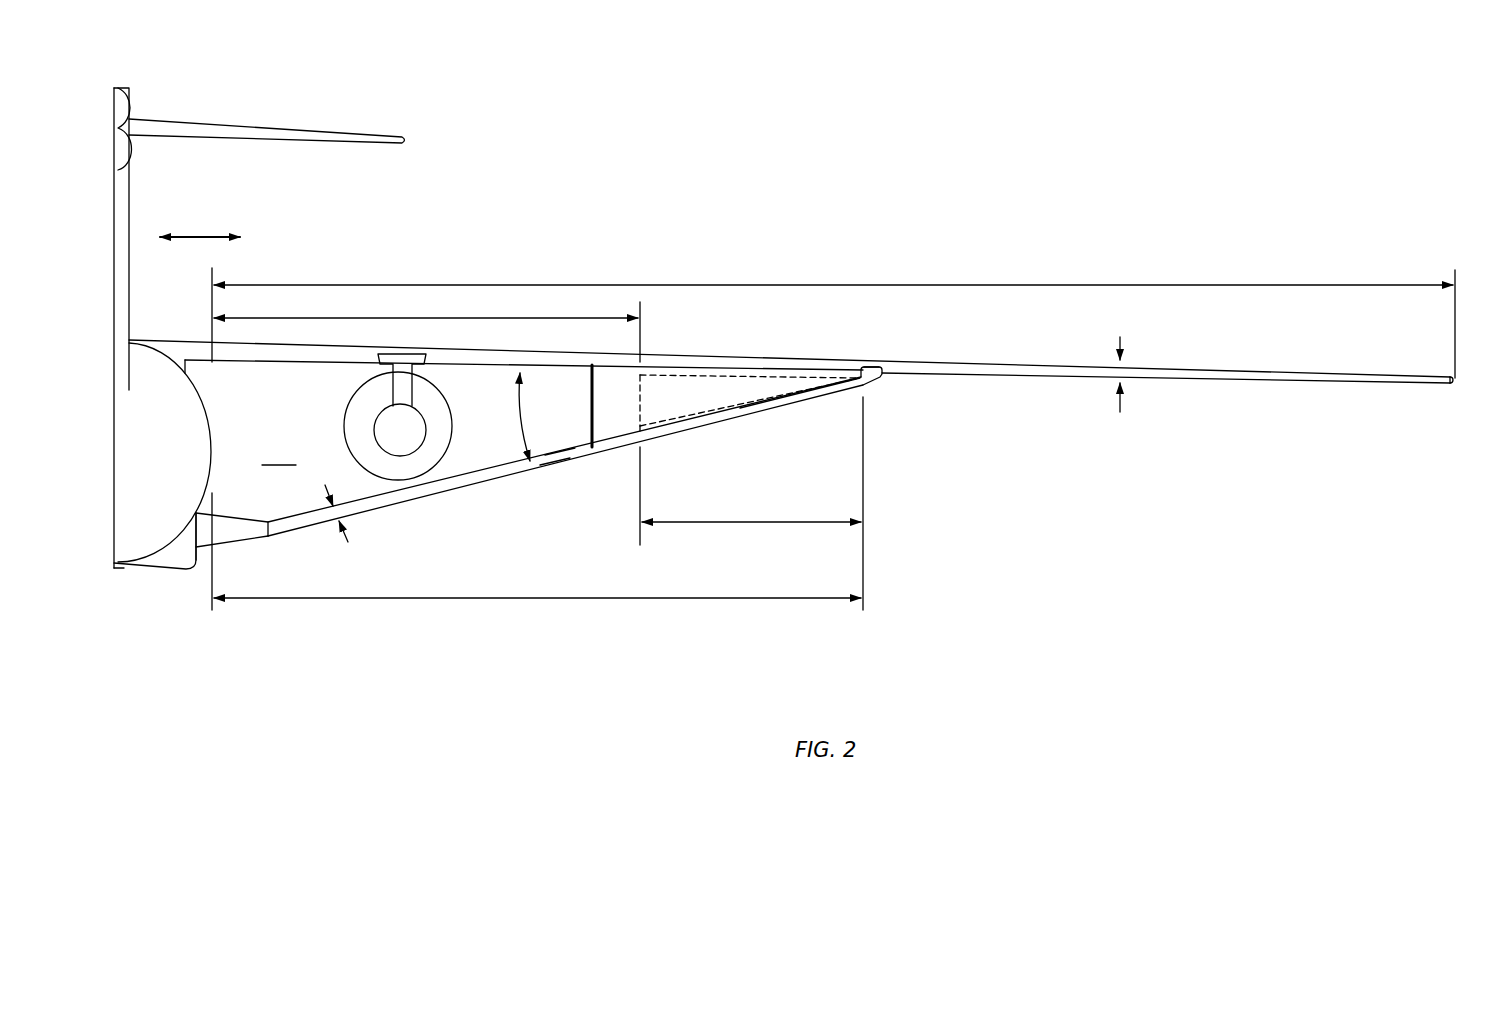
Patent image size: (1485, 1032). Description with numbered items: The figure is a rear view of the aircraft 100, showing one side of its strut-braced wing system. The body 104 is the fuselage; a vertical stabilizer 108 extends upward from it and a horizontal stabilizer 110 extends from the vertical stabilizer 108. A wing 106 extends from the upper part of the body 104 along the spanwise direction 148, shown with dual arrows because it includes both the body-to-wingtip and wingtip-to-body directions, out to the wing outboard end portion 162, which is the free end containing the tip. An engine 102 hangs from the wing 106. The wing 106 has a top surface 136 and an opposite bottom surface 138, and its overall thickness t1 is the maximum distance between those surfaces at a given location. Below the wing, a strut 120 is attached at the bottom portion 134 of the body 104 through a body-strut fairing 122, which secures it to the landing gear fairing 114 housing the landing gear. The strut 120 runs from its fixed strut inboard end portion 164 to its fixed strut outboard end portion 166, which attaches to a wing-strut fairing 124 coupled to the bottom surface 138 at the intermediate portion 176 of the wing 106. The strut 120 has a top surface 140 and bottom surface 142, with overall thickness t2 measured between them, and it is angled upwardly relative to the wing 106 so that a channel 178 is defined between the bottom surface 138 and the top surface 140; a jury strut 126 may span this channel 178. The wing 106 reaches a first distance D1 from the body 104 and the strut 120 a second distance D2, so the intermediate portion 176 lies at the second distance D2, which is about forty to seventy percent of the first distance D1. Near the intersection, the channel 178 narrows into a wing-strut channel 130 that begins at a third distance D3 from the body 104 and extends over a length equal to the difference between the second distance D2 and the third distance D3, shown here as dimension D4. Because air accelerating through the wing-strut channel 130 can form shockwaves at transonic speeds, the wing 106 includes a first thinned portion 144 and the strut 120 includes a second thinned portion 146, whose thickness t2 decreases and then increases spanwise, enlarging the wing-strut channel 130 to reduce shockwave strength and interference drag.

The aircraft 100 is at (868, 170).
The engine 102 is at (342, 416).
The body 104 is at (191, 381).
The wing 106 is at (1289, 389).
The vertical stabilizer 108 is at (132, 195).
The horizontal stabilizer 110 is at (311, 132).
The landing gear fairing 114 is at (180, 566).
The strut 120 is at (437, 501).
The body-strut fairing 122 is at (232, 544).
The wing-strut fairing 124 is at (883, 378).
The jury strut 126 is at (587, 380).
The wing-strut channel 130 is at (636, 408).
The bottom portion 134 is at (120, 567).
The top surface 136 is at (1020, 360).
The bottom surface 138 is at (1018, 383).
The top surface 140 is at (558, 459).
The bottom surface 142 is at (553, 467).
The first thinned portion 144 is at (766, 374).
The second thinned portion 146 is at (742, 407).
The spanwise direction 148 is at (212, 238).
The wing outboard end portion 162 is at (1458, 389).
The strut inboard end portion 164 is at (292, 521).
The strut outboard end portion 166 is at (842, 398).
The intermediate portion 176 is at (874, 364).
The channel 178 is at (282, 455).
The first distance D1 is at (820, 283).
The second distance D2 is at (565, 600).
The third distance D3 is at (392, 318).
The triangle length D4 is at (767, 523).
The overall thickness t1 is at (1125, 345).
The overall thickness t2 is at (347, 540).